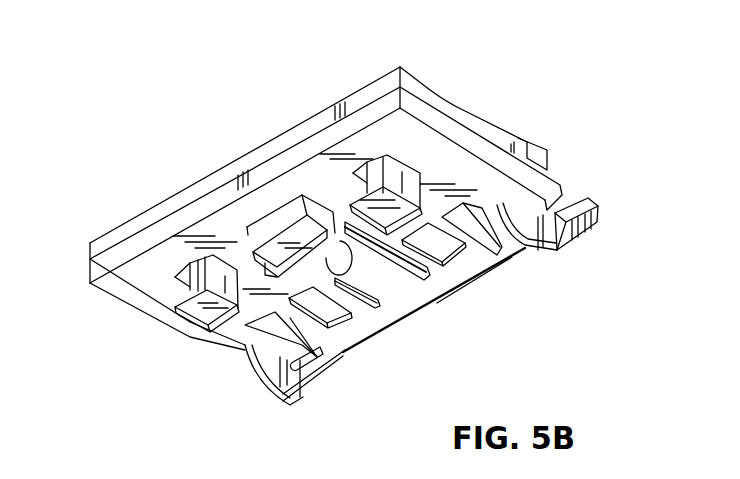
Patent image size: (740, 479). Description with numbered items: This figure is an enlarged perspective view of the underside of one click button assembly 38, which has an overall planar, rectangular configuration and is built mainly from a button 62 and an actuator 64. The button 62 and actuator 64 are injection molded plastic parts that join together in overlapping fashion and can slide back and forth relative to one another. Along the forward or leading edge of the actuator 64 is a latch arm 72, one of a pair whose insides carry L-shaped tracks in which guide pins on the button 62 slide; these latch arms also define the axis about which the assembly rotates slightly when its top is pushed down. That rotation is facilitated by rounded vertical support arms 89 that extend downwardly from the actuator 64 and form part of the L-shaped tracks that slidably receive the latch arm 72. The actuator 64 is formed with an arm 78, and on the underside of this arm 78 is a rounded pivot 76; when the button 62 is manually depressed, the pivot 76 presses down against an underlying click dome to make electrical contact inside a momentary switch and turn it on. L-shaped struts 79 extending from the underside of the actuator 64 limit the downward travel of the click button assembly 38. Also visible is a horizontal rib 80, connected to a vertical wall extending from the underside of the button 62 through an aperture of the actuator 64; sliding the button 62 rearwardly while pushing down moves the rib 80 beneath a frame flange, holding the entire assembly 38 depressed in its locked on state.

The click button assembly 38 is at (245, 127).
The button 62 is at (118, 230).
The actuator 64 is at (117, 288).
The latch arm 72 is at (600, 209).
The rounded pivot 76 is at (331, 278).
The arm 78 is at (420, 303).
The L-shaped strut 79 is at (380, 192).
The horizontal rib 80 is at (285, 235).
The rounded vertical support arm 89 is at (553, 256).